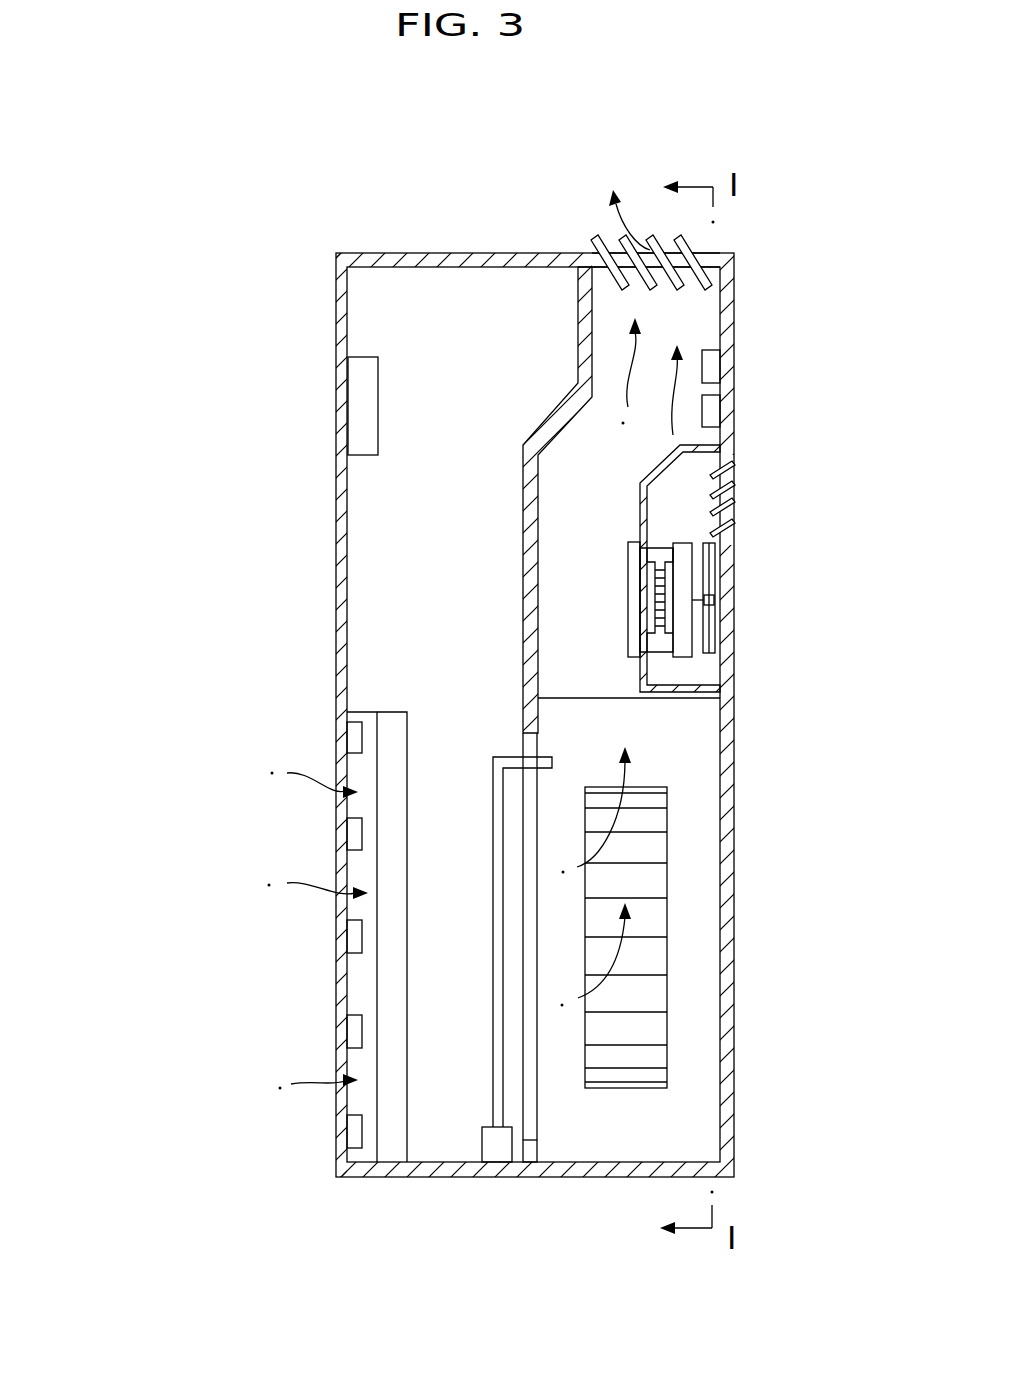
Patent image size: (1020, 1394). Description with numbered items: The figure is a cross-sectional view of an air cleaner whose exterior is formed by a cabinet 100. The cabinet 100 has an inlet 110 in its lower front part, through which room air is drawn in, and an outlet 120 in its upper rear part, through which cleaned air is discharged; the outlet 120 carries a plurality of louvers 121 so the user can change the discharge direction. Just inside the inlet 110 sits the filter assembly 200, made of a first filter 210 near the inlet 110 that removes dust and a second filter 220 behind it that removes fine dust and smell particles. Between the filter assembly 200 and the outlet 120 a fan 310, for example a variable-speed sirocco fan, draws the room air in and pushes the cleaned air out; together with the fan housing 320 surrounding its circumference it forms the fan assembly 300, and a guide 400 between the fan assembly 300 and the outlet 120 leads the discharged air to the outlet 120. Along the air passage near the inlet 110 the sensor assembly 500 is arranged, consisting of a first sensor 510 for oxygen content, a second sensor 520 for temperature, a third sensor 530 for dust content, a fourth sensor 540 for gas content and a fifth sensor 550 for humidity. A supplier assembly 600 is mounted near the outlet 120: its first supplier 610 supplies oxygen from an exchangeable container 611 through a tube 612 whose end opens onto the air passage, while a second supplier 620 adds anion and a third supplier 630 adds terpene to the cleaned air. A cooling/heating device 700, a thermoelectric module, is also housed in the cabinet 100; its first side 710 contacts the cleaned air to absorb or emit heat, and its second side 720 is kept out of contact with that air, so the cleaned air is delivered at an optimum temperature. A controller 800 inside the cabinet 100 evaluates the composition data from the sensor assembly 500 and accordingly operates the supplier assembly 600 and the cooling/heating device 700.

The cabinet 100 is at (723, 1048).
The inlet 110 is at (340, 985).
The outlet 120 is at (688, 280).
The louvers 121 is at (597, 237).
The filter assembly 200 is at (348, 1031).
The first filter 210 is at (357, 1175).
The second filter 220 is at (392, 1175).
The fan assembly 300 is at (727, 893).
The fan 310 is at (653, 847).
The fan housing 320 is at (721, 732).
The guide 400 is at (527, 470).
The sensor assembly 500 is at (201, 913).
The first sensor 510 is at (355, 730).
The second sensor 520 is at (355, 832).
The third sensor 530 is at (355, 935).
The fourth sensor 540 is at (355, 1030).
The fifth sensor 550 is at (254, 1128).
The supplier assembly 600 is at (668, 836).
The first supplier 610 is at (624, 886).
The container 611 is at (498, 1152).
The tube 612 is at (497, 1100).
The second supplier 620 is at (721, 413).
The third supplier 630 is at (721, 368).
The cooling/heating device 700 is at (737, 596).
The first side of the thermoelectric module 710 is at (633, 620).
The second side of the thermoelectric module 720 is at (686, 590).
The controller 800 is at (378, 405).